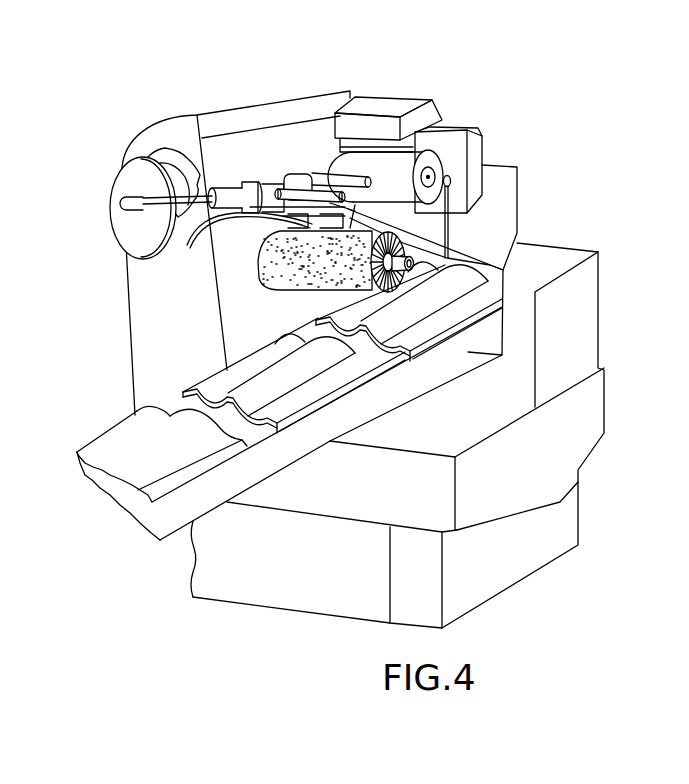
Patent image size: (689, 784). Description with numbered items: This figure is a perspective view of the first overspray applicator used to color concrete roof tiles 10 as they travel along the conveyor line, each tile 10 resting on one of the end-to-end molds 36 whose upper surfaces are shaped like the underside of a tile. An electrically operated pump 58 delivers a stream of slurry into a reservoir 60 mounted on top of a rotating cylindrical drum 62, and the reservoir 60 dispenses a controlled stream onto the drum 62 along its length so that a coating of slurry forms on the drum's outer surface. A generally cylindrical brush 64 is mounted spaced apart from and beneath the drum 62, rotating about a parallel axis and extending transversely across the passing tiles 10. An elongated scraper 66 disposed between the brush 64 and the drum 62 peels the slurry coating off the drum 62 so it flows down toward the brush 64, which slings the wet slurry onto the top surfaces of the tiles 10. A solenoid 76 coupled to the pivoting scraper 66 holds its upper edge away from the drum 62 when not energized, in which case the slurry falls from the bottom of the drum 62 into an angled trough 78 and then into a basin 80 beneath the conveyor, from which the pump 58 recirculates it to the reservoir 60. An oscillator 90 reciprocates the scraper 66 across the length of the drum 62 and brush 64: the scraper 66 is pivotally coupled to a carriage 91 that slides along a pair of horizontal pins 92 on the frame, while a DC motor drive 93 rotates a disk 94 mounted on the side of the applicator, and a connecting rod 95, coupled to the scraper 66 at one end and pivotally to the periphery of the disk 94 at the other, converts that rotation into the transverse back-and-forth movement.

The concrete roof tile 10 is at (277, 343).
The mold 36 is at (383, 350).
The pump 58 is at (372, 107).
The reservoir 60 is at (430, 140).
The cylindrical drum 62 is at (437, 172).
The cylindrical brush 64 is at (268, 288).
The scraper 66 is at (397, 218).
The solenoid 76 is at (297, 233).
The trough 78 is at (503, 243).
The basin 80 is at (498, 420).
The oscillator 90 is at (114, 237).
The carriage 91 is at (265, 190).
The horizontal pins 92 is at (303, 193).
The DC motor drive 93 is at (177, 165).
The disk 94 is at (118, 192).
The connecting rod 95 is at (157, 209).